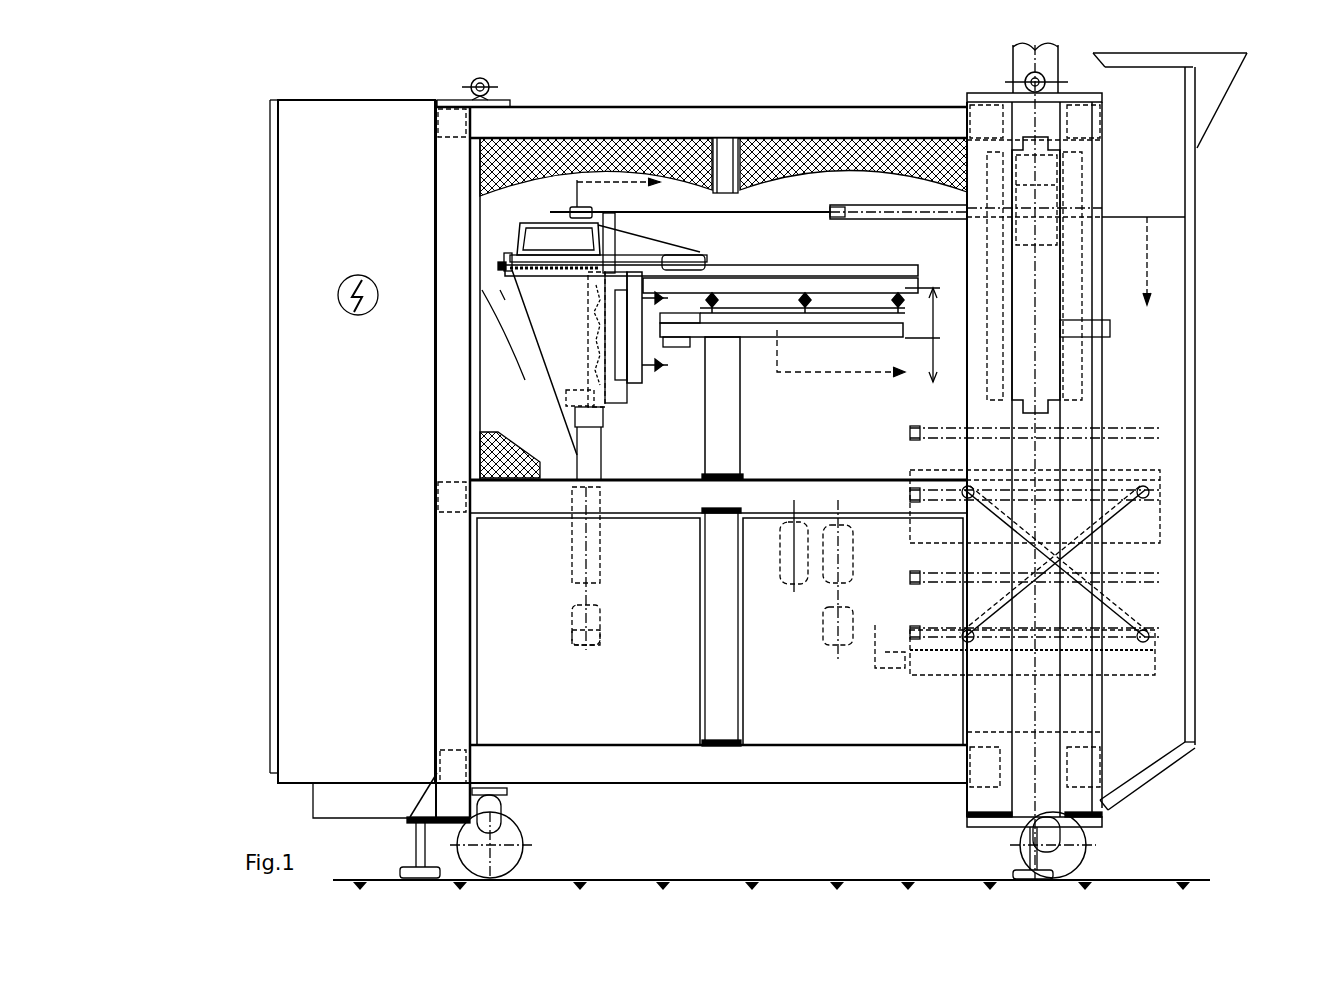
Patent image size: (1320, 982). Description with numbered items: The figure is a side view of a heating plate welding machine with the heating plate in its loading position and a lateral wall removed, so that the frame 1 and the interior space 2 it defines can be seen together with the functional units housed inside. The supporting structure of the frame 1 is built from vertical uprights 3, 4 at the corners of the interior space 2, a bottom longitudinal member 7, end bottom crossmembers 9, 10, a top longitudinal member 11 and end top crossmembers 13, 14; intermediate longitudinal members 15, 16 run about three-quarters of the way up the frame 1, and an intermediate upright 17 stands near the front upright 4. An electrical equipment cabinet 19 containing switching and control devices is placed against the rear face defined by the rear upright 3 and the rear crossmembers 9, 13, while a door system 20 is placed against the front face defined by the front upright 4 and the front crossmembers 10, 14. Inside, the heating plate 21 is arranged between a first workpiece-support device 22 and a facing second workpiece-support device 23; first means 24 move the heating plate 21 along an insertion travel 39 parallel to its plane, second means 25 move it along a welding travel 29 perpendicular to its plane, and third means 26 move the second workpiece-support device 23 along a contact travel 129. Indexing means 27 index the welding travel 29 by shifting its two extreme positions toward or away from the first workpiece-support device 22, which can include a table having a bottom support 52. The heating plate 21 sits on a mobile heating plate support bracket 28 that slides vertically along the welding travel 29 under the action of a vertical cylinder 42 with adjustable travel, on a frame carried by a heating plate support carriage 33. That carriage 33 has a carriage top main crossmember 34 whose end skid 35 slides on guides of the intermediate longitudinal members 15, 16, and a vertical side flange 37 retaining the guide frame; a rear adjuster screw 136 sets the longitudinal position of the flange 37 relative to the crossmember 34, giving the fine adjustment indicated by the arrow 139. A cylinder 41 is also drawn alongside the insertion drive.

The frame 1 is at (592, 788).
The interior space 2 is at (823, 678).
The vertical upright 3 is at (452, 718).
The vertical upright 4 is at (1080, 692).
The bottom longitudinal member 7 is at (663, 770).
The end bottom crossmember 9 is at (452, 768).
The end bottom crossmember 10 is at (1082, 770).
The top longitudinal member 11 is at (812, 120).
The end top crossmember 13 is at (462, 125).
The end top crossmember 14 is at (1083, 125).
The intermediate longitudinal member 15 is at (492, 318).
The intermediate longitudinal member 16 is at (523, 320).
The intermediate upright 17 is at (1000, 708).
The electrical equipment cabinet 19 is at (340, 452).
The door system 20 is at (1165, 185).
The heating plate 21 is at (760, 330).
The first workpiece-support device 22 is at (1000, 480).
The second workpiece-support device 23 is at (1020, 228).
The first means for moving the heating plate 24 is at (857, 195).
The second means for moving the heating plate 25 is at (570, 557).
The third means for moving the second workpiece-support device 26 is at (1020, 50).
The indexing means 27 is at (627, 377).
The mobile heating plate support bracket 28 is at (642, 377).
The welding travel 29 is at (936, 335).
The heating plate support carriage 33 is at (535, 243).
The carriage top main crossmember 34 is at (543, 223).
The skid 35 is at (690, 262).
The vertical side flange 37 is at (568, 382).
The insertion travel 39 is at (637, 180).
The cylinder 41 is at (906, 212).
The vertical cylinder 42 is at (590, 555).
The bottom support 52 is at (928, 668).
The contact travel 129 is at (1153, 272).
The rear adjuster screw 136 is at (505, 262).
The fine adjustment arrow 139 is at (855, 375).